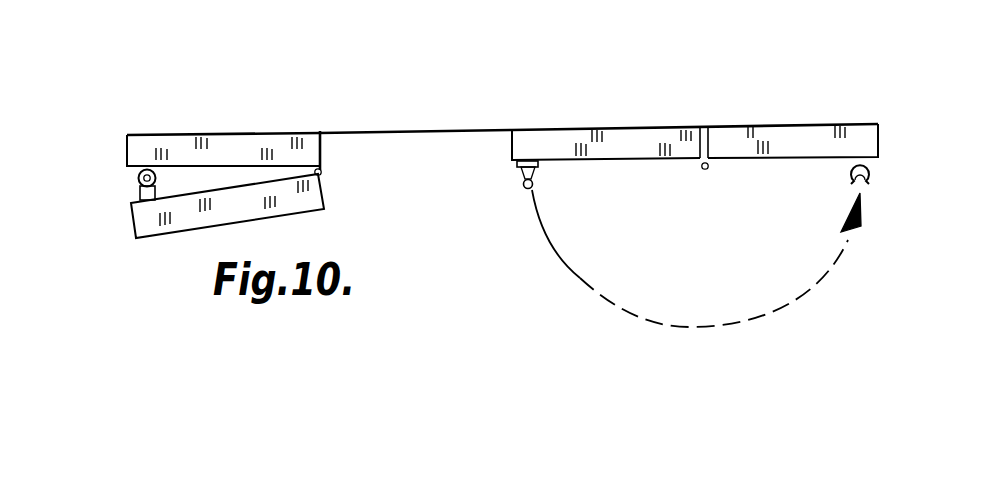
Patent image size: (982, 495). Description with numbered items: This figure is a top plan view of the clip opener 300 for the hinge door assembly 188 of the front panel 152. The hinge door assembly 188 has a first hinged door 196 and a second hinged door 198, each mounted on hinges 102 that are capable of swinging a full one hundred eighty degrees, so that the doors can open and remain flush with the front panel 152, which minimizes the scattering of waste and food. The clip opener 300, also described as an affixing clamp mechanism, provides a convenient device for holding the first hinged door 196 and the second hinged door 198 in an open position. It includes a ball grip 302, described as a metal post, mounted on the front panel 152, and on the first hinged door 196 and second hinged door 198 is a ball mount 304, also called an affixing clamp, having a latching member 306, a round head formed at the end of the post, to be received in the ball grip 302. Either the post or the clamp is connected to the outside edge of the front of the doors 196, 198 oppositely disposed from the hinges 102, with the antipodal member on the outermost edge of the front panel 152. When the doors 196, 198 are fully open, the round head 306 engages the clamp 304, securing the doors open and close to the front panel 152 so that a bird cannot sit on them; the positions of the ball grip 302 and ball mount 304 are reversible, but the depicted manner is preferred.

The hinge door assembly 188 is at (262, 70).
The front panel 152 is at (183, 137).
The first hinged door 196 is at (603, 128).
The second hinged door 198 is at (190, 230).
The hinge 102 is at (321, 172).
The clip opener 300 is at (92, 138).
The ball grip 302 is at (139, 178).
The latching member 306 is at (285, 217).
The ball mount 304 is at (140, 193).